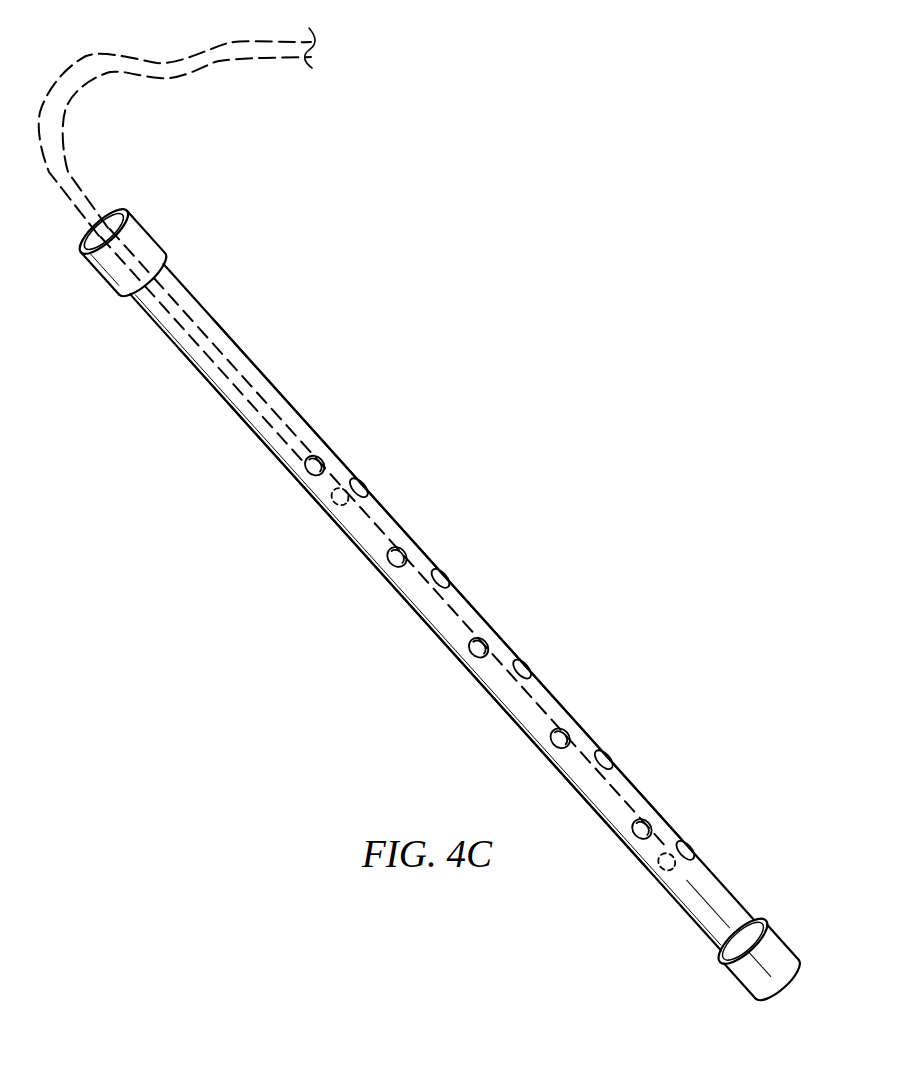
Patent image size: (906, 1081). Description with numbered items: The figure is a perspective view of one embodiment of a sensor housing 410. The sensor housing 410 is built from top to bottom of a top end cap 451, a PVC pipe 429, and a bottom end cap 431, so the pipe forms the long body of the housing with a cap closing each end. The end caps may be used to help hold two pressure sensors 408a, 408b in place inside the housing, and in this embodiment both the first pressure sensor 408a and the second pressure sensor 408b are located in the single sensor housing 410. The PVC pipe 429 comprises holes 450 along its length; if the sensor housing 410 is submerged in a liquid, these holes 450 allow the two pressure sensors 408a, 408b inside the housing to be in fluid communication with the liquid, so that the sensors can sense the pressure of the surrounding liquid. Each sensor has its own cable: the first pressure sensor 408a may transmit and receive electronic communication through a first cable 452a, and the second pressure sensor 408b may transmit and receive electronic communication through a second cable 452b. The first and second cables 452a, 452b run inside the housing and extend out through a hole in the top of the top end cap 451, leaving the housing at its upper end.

The sensor housing 410 is at (182, 455).
The PVC pipe 429 is at (648, 803).
The bottom end cap 431 is at (743, 996).
The holes 450 is at (366, 484).
The top end cap 451 is at (150, 244).
The first cable 452a is at (176, 80).
The second cable 452b is at (223, 43).
The first pressure sensor 408a is at (663, 873).
The second pressure sensor 408b is at (335, 503).